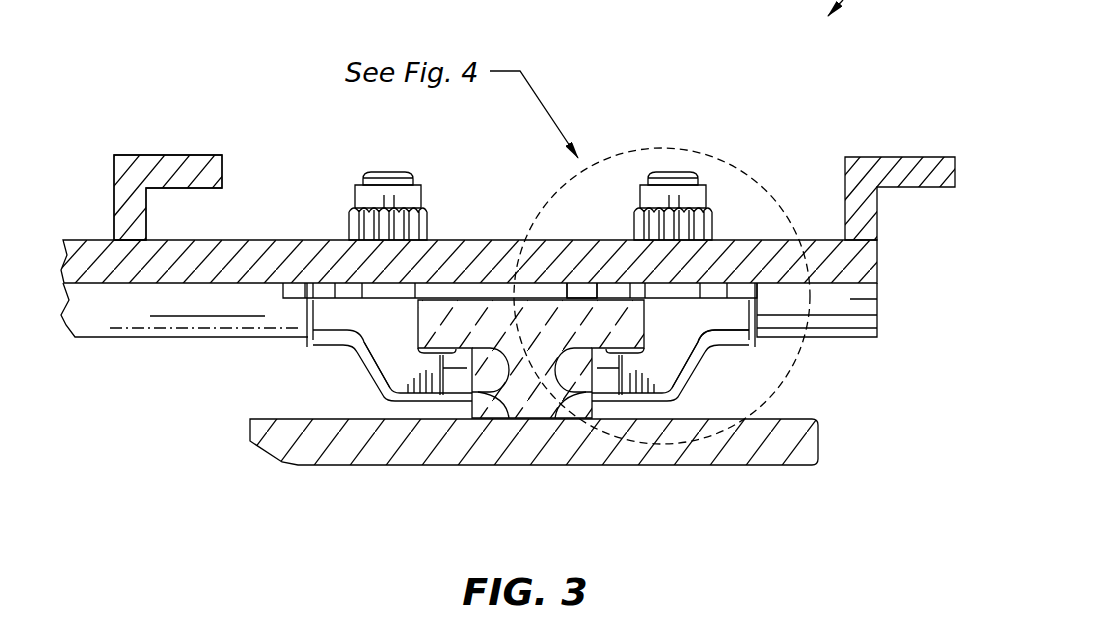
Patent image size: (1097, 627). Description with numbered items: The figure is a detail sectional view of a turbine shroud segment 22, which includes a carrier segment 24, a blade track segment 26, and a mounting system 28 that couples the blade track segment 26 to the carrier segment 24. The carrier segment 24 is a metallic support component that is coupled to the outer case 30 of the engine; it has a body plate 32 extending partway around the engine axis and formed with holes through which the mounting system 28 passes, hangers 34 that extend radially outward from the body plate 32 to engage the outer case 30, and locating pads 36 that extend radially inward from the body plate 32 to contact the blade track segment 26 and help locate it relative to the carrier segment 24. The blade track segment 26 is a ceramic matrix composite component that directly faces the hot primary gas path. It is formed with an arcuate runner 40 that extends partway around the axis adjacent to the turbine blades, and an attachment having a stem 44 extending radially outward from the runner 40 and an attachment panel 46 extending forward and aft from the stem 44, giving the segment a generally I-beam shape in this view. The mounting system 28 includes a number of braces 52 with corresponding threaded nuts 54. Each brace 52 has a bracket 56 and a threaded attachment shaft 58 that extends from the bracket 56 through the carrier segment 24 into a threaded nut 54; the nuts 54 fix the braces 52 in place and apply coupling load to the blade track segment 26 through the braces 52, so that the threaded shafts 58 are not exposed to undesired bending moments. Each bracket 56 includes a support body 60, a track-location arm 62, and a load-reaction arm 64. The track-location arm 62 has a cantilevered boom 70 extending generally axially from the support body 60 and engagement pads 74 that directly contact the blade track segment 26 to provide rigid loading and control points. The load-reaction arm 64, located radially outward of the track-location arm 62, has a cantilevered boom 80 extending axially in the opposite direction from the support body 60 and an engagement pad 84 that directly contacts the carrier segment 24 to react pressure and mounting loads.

The shroud segment 22 is at (824, 88).
The carrier segment 24 is at (108, 180).
The blade track segment 26 is at (742, 474).
The mounting system 28 is at (735, 190).
The outer case 30 is at (698, 334).
The body plate 32 is at (214, 242).
The hangers 34 is at (160, 152).
The locating pads 36 is at (583, 293).
The runner 40 is at (706, 468).
The stem 44 is at (482, 355).
The attachment panel 46 is at (483, 305).
The braces 52 is at (215, 362).
The threaded nuts 54 is at (357, 196).
The bracket 56 is at (350, 368).
The threaded attachment shaft 58 is at (410, 168).
The support body 60 is at (378, 368).
The track-location arm 62 is at (420, 462).
The load-reaction arm 64 is at (222, 350).
The cantilevered boom 70 is at (430, 378).
The engagement pads 74 is at (460, 358).
The cantilevered boom 80 is at (302, 321).
The engagement pad 84 is at (300, 290).